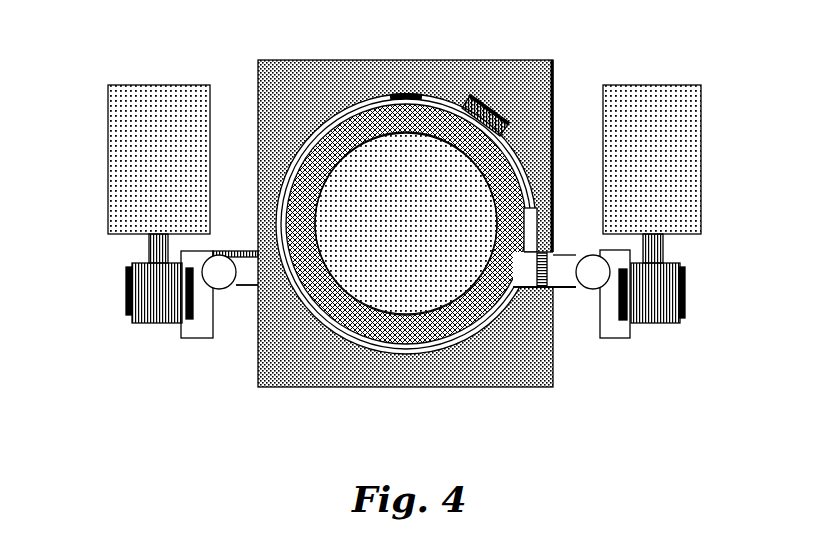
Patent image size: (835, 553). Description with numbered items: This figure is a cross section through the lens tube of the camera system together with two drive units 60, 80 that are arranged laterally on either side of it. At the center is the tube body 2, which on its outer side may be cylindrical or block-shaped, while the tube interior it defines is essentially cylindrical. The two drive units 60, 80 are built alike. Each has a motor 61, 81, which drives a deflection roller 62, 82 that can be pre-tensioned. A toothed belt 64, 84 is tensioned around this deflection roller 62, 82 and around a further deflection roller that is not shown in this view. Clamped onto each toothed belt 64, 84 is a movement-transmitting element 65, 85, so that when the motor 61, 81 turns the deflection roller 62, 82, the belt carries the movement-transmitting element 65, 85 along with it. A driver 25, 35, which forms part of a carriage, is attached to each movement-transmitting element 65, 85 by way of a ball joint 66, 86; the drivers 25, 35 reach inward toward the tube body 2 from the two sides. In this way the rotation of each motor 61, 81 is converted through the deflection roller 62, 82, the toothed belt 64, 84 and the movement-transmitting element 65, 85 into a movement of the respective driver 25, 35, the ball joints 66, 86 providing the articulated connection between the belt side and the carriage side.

The tube body 2 is at (410, 196).
The driver 25 is at (594, 153).
The driver 35 is at (205, 153).
The drive unit 60 is at (686, 282).
The motor 61 is at (692, 169).
The deflection roller 62 is at (703, 312).
The toothed belt 64 is at (680, 332).
The movement-transmitting element 65 is at (654, 344).
The ball joint 66 is at (627, 371).
The drive unit 80 is at (126, 282).
The motor 81 is at (113, 170).
The deflection roller 82 is at (106, 310).
The toothed belt 84 is at (127, 332).
The movement-transmitting element 85 is at (156, 344).
The ball joint 86 is at (186, 371).